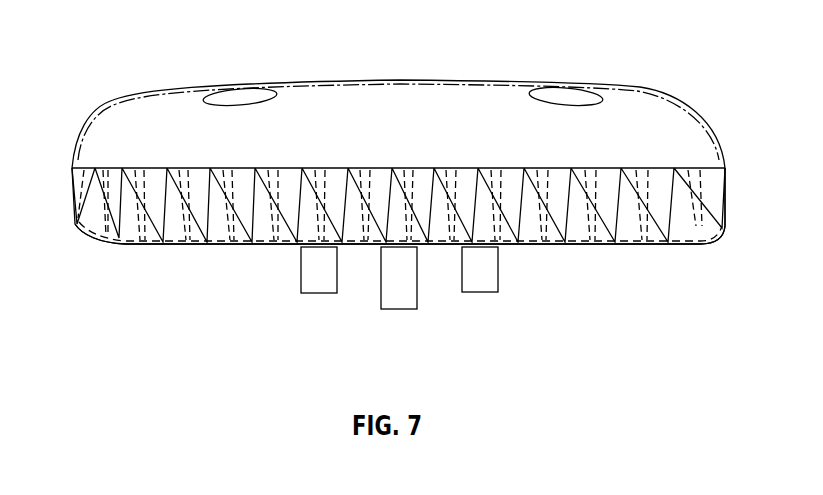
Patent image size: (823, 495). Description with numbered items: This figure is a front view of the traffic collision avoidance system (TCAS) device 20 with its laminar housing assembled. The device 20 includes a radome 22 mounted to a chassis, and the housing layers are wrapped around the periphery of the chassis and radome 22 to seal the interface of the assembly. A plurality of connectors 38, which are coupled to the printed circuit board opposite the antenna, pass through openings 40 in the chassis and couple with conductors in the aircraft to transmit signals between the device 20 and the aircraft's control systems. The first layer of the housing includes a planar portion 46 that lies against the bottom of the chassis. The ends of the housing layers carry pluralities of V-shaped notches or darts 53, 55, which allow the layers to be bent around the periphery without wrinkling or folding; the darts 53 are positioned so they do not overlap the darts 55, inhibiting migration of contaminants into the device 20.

The traffic collision avoidance system (TCAS) device 20 is at (135, 39).
The radome 22 is at (400, 80).
The connectors 38 is at (301, 270).
The openings 40 is at (728, 196).
The planar portion 46 is at (220, 247).
The darts 53 is at (82, 236).
The darts 55 is at (80, 193).